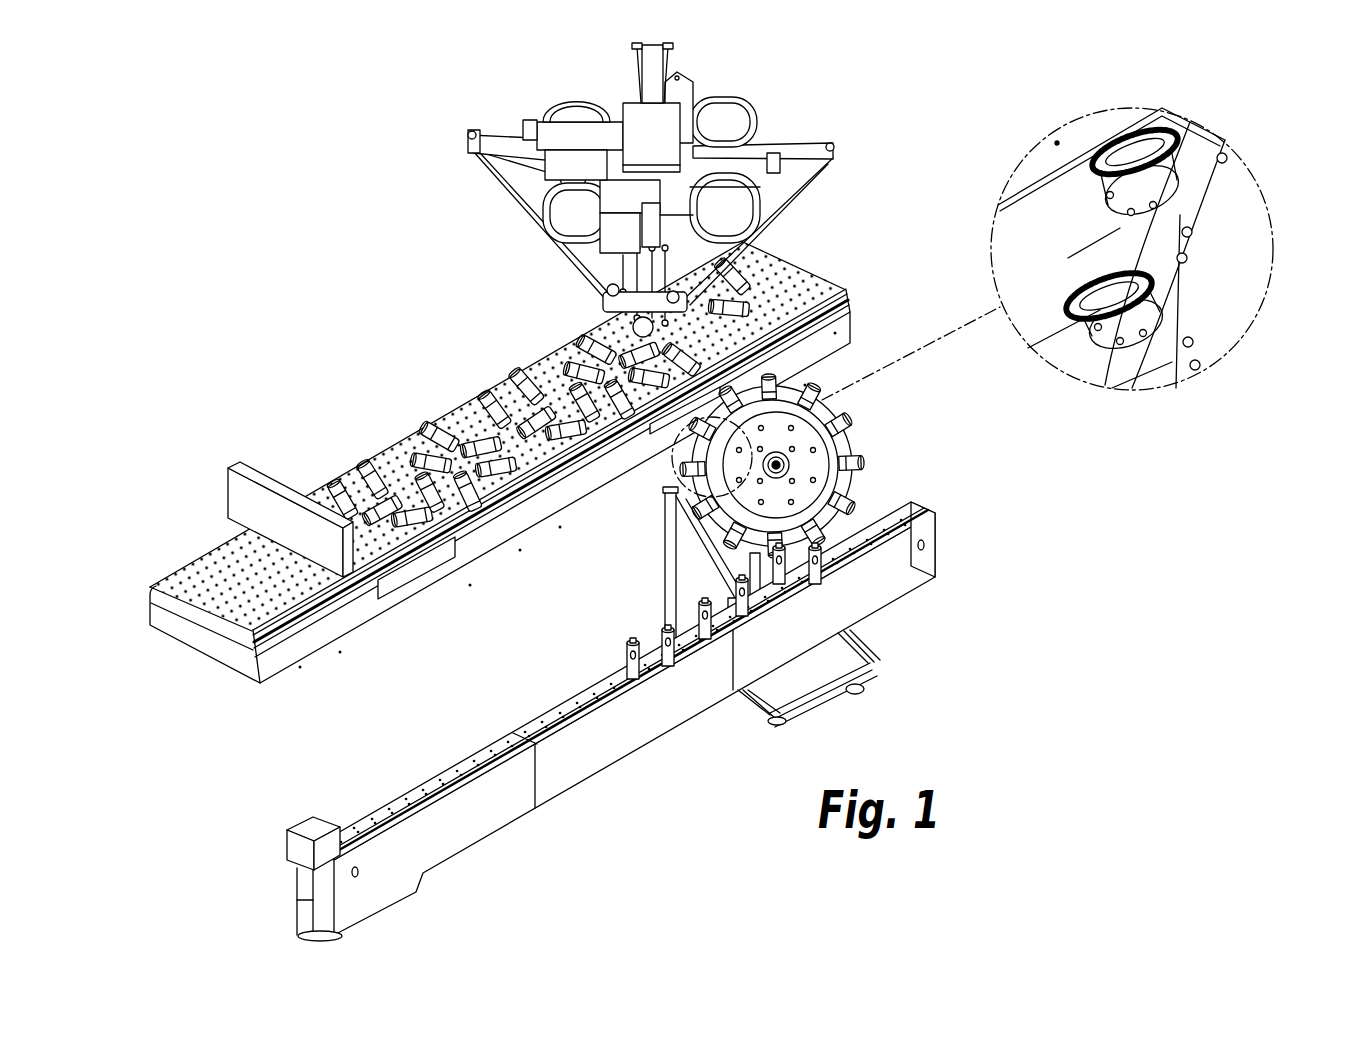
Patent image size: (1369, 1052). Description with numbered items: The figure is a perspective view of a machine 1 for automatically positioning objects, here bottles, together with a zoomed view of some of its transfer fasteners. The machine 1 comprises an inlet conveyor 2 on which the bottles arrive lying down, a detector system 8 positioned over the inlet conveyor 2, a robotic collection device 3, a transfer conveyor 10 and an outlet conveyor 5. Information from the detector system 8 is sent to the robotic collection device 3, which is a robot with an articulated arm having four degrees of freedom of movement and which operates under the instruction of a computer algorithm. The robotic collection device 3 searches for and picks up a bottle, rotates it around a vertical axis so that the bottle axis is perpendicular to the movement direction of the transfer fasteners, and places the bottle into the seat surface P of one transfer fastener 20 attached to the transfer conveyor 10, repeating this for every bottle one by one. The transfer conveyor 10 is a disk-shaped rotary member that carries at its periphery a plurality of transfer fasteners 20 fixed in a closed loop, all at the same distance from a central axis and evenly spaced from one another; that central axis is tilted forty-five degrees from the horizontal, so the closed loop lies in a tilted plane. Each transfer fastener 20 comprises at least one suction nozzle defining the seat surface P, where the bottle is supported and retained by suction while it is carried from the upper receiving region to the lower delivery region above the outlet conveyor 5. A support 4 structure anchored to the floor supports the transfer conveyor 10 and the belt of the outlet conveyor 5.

The machine 1 is at (735, 492).
The inlet conveyor 2 is at (218, 556).
The robotic collection device 3 is at (745, 129).
The support structure 4 is at (663, 577).
The outlet conveyor 5 is at (450, 772).
The detector system 8 is at (243, 462).
The transfer conveyor 10 is at (963, 317).
The transfer fastener 20 is at (963, 317).
The seat surface P is at (1100, 137).